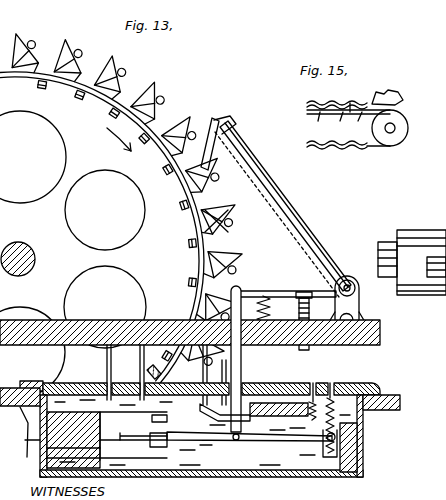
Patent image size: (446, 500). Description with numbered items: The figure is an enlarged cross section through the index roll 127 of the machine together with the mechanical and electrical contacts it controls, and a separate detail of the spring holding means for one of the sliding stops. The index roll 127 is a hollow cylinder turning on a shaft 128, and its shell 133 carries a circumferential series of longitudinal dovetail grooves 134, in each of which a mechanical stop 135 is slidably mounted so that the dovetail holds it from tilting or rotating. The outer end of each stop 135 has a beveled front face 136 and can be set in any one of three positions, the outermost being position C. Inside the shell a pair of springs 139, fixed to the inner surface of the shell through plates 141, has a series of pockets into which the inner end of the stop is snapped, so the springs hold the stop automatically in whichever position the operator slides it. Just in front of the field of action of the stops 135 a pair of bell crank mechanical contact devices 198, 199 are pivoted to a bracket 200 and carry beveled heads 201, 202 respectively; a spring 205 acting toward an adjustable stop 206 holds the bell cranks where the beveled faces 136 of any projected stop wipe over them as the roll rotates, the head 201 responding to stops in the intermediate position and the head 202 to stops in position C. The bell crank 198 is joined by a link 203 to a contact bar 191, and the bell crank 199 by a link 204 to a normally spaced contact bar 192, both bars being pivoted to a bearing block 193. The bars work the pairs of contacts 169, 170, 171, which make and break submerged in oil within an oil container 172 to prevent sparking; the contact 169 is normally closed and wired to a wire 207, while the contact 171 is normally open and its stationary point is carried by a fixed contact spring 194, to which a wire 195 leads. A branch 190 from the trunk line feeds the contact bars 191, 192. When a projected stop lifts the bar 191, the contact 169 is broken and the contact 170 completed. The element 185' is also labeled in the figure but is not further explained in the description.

In FIG. 13, the index roll 127 is at (105, 210).
In FIG. 13, the shaft 128 is at (27, 247).
In FIG. 13, the shell 133 is at (128, 97).
In FIG. 13, the dovetail grooves 134 is at (97, 77).
In FIG. 13, the mechanical stop 135 is at (66, 63).
In FIG. 13, the beveled front face 136 is at (26, 39).
In FIG. 15, the springs 139 is at (337, 107).
In FIG. 15, the plates 141 is at (398, 123).
In FIG. 13, the contact 169 is at (153, 456).
In FIG. 13, the contact 170 is at (158, 428).
In FIG. 13, the contact 171 is at (205, 388).
In FIG. 13, the oil container 172 is at (360, 417).
In FIG. 13, the rod 185' is at (86, 372).
In FIG. 13, the branch 190 is at (331, 402).
In FIG. 13, the contact bar 191 is at (220, 441).
In FIG. 13, the contact bar 192 is at (264, 433).
In FIG. 13, the bearing block 193 is at (357, 447).
In FIG. 13, the fixed contact spring 194 is at (245, 417).
In FIG. 13, the wire 195 is at (314, 400).
In FIG. 13, the bell crank mechanical contact device 198 is at (254, 181).
In FIG. 13, the bell crank mechanical contact device 199 is at (299, 229).
In FIG. 13, the bracket 200 is at (360, 298).
In FIG. 13, the head 201 is at (203, 129).
In FIG. 13, the head 202 is at (223, 146).
In FIG. 13, the link 203 is at (223, 384).
In FIG. 13, the link 204 is at (241, 291).
In FIG. 13, the spring 205 is at (270, 309).
In FIG. 13, the adjustable stop 206 is at (302, 292).
In FIG. 13, the wire 207 is at (143, 383).
In FIG. 13, the stop position C is at (438, 277).